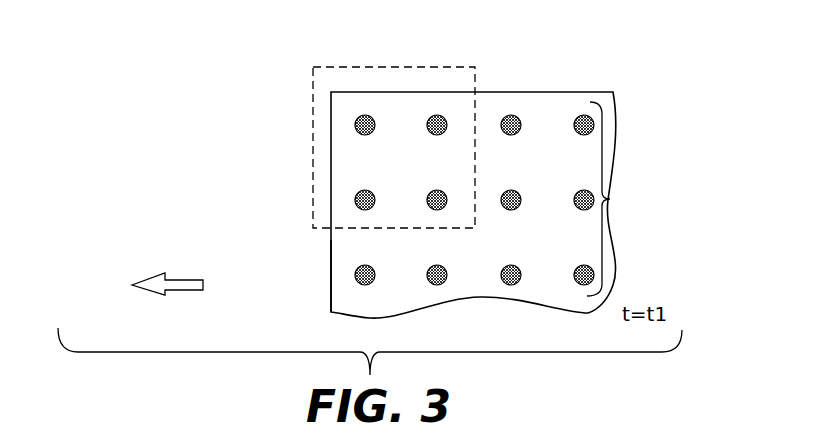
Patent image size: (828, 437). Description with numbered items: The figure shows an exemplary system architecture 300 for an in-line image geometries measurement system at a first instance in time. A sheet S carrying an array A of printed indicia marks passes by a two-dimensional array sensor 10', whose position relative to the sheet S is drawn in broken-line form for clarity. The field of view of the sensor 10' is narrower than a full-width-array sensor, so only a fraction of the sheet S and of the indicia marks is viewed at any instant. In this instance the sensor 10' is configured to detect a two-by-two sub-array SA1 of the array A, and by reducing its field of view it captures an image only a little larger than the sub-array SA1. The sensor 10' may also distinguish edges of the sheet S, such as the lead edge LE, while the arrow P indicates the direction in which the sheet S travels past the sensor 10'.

The system architecture 300 is at (227, 41).
The two-dimensional array sensor 10' is at (417, 131).
The sub-array SA1 is at (400, 165).
The sheet S is at (568, 92).
The array A is at (611, 199).
The lead edge LE is at (326, 260).
The print direction P is at (183, 278).